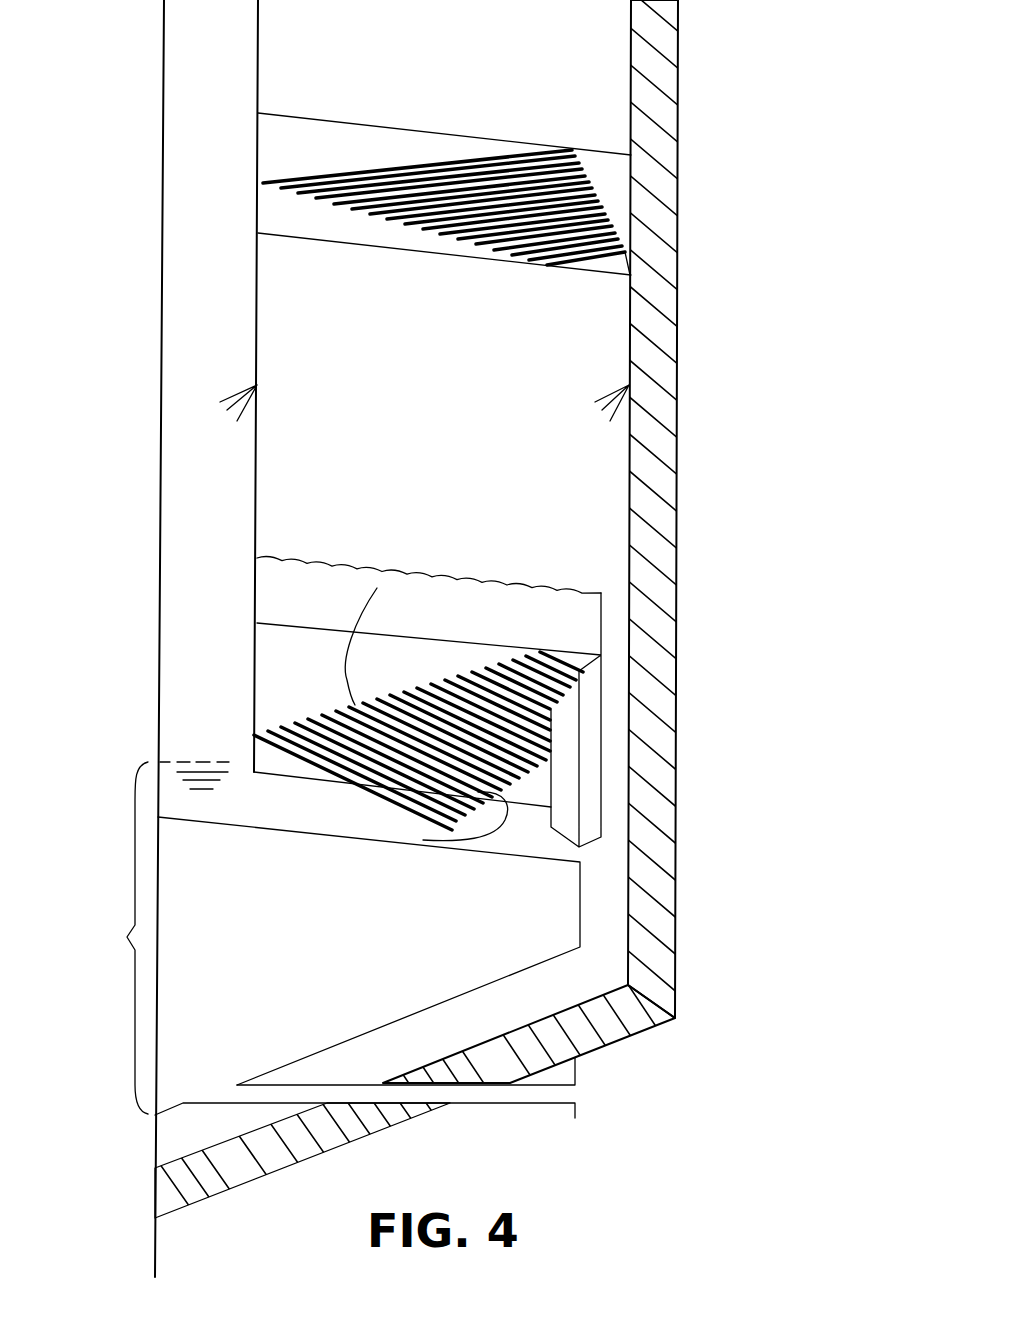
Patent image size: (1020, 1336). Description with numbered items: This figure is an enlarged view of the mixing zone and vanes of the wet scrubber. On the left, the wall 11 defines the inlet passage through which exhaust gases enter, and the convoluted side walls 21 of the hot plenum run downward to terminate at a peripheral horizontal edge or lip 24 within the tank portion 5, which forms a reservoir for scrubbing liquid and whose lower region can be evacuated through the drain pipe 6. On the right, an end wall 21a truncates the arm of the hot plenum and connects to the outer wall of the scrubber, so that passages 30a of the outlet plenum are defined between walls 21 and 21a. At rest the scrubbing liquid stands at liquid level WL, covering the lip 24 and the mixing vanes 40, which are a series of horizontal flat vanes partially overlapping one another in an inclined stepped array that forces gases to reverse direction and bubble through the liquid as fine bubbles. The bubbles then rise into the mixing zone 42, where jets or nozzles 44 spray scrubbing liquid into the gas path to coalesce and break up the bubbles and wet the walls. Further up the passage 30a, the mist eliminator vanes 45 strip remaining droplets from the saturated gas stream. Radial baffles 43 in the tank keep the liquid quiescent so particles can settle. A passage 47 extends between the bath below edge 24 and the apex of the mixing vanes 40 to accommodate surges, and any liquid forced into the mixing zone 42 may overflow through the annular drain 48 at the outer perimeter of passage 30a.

The wall 11 is at (159, 526).
The side walls of hot plenum 21 is at (257, 218).
The end wall 21a is at (640, 82).
The passages of outer plenum 30a is at (473, 101).
The mist eliminator vanes 45 is at (340, 165).
The mixing zone 42 is at (425, 365).
The jets or nozzles 44 is at (234, 394).
The passage 47 is at (584, 662).
The mixing vanes 40 is at (427, 674).
The liquid level at rest WL is at (199, 756).
The peripheral horizontal edge 24 is at (277, 777).
The radial baffles 43 is at (331, 935).
The tank portion 5 is at (122, 938).
The drain pipe 6 is at (573, 1108).
The annular drain 48 is at (617, 778).